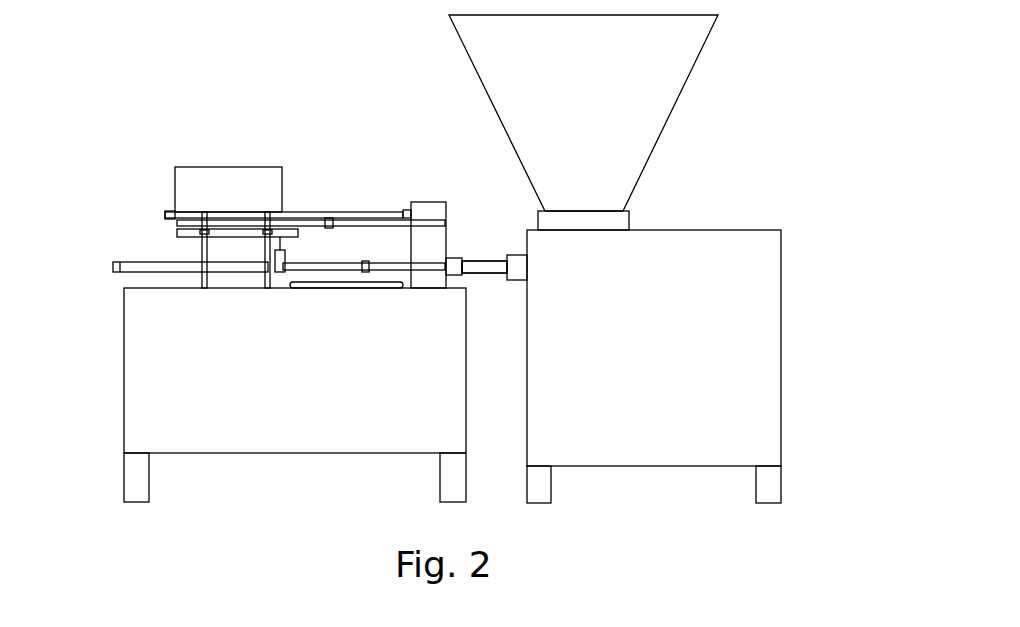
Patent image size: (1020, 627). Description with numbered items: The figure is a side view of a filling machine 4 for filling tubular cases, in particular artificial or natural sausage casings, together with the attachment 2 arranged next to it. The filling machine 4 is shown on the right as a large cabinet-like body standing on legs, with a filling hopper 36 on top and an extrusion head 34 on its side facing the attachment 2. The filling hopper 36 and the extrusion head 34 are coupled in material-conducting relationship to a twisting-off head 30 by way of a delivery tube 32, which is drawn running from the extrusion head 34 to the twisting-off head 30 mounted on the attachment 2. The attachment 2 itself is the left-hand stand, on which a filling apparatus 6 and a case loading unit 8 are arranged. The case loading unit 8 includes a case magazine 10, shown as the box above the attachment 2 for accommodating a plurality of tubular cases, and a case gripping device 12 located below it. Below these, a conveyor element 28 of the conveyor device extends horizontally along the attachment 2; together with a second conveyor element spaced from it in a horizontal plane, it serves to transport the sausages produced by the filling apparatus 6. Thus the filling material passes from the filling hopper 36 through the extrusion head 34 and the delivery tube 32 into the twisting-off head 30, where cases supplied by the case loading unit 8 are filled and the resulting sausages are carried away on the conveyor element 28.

The attachment 2 is at (172, 102).
The filling machine 4 is at (730, 154).
The filling apparatus 6 is at (358, 190).
The case loading unit 8 is at (290, 192).
The case magazine 10 is at (255, 192).
The case gripping device 12 is at (238, 219).
The conveyor element 28 is at (130, 267).
The twisting-off head 30 is at (432, 242).
The delivery tube 32 is at (488, 265).
The extrusion head 34 is at (517, 262).
The filling hopper 36 is at (683, 47).